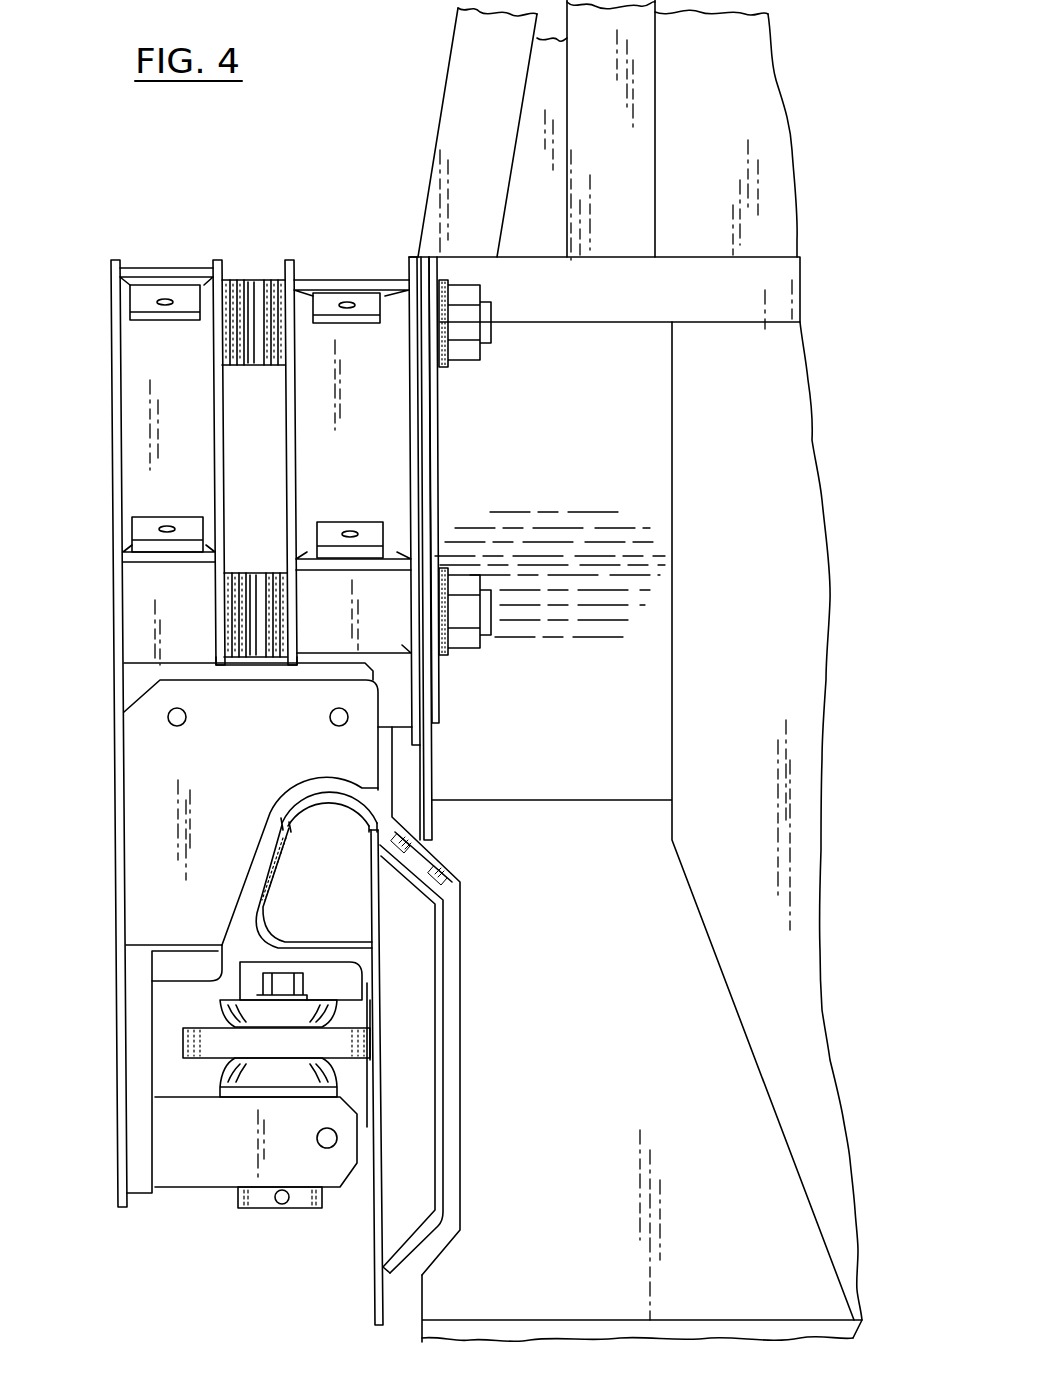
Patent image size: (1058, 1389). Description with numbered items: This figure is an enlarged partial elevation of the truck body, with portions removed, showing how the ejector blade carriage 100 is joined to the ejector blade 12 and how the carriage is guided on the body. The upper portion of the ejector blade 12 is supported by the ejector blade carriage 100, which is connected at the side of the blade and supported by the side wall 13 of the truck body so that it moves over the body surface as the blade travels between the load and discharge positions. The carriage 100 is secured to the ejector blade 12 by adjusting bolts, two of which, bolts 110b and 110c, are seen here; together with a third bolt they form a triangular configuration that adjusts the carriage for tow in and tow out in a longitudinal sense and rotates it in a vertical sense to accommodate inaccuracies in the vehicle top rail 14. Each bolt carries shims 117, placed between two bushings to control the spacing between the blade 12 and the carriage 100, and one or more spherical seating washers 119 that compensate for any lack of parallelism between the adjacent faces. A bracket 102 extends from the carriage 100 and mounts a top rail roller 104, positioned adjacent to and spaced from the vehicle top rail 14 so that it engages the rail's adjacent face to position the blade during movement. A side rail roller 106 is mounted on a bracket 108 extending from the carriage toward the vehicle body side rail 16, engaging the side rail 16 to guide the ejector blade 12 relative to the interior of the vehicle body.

The ejector blade 12 is at (563, 459).
The side wall 13 is at (443, 965).
The vehicle top rail 14 is at (270, 928).
The vehicle body side rail 16 is at (374, 1212).
The ejector blade carriage 100 is at (142, 254).
The bracket 102 is at (175, 985).
The top rail roller 104 is at (242, 962).
The side rail roller 106 is at (183, 1040).
The bracket 108 is at (165, 1132).
The adjustment bolt 110b is at (257, 280).
The adjustment bolt 110c is at (234, 615).
The shim 117 is at (240, 345).
The spherical seating washer 119 is at (253, 280).